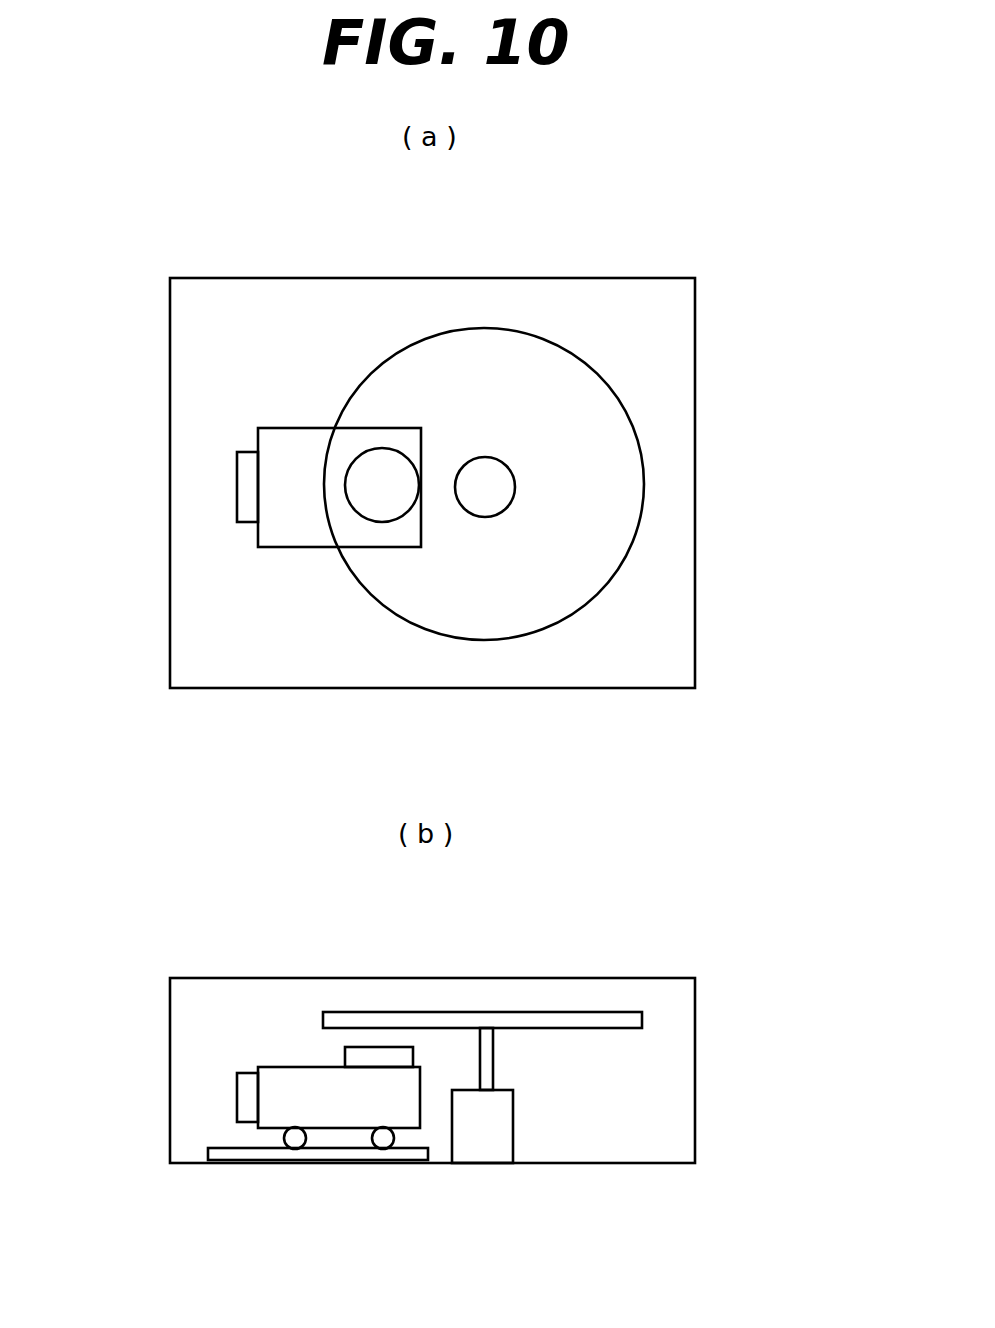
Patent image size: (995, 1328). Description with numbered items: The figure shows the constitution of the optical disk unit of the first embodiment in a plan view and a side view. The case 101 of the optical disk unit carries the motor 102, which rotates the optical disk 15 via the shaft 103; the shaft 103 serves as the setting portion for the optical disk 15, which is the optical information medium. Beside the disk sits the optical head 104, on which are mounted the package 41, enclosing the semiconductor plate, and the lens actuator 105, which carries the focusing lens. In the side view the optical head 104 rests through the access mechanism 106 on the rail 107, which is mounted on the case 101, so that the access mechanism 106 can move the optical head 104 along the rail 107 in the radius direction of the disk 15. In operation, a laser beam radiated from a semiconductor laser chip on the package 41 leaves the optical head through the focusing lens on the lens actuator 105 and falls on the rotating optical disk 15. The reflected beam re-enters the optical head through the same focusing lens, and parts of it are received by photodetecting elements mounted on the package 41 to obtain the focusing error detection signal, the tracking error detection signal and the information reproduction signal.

The optical disk 15 is at (522, 332).
The package 41 is at (237, 487).
The case 101 is at (248, 688).
The motor 102 is at (500, 513).
The shaft 103 is at (493, 1052).
The optical head 104 is at (298, 427).
The lens actuator 105 is at (382, 447).
The access mechanism 106 is at (382, 1137).
The rail 107 is at (262, 1155).